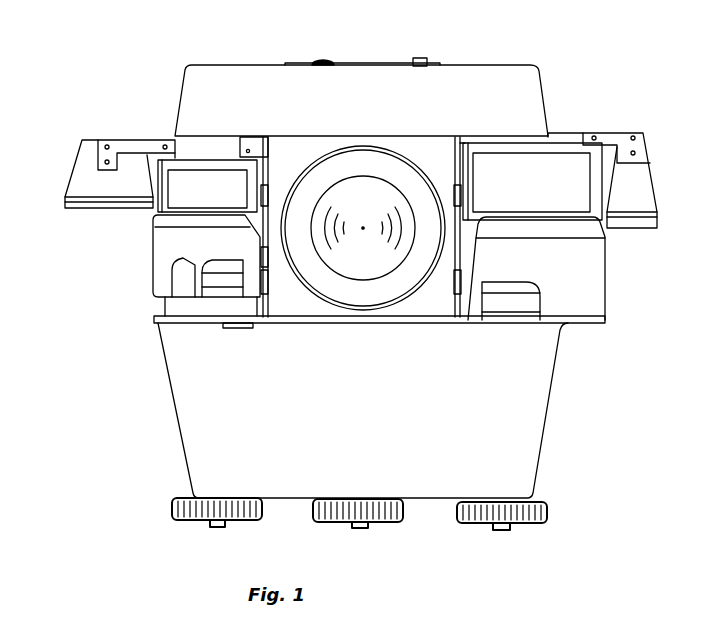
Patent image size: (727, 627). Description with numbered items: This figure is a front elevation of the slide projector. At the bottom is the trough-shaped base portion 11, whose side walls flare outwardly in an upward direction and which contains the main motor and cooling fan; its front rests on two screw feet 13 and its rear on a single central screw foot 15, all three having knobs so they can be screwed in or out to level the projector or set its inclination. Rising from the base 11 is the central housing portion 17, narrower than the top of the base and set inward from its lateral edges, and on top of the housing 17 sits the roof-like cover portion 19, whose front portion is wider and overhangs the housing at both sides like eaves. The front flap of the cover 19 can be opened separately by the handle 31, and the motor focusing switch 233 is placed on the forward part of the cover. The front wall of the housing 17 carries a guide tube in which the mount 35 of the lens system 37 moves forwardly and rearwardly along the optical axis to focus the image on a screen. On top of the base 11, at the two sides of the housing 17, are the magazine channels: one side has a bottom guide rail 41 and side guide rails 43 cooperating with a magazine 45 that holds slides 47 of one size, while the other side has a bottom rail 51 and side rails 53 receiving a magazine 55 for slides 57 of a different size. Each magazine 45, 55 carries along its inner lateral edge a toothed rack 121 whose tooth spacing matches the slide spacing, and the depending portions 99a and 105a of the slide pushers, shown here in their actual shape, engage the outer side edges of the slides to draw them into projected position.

The base portion 11 is at (177, 400).
The screw feet 13 is at (170, 508).
The screw foot 15 is at (380, 480).
The central housing portion 17 is at (293, 145).
The cover portion 19 is at (188, 85).
The handle 31 is at (420, 58).
The mount 35 is at (390, 162).
The lens system 37 is at (345, 188).
The bottom guide rail 41 is at (221, 275).
The side guide rails 43 is at (263, 193).
The magazine 45 is at (158, 245).
The slides 47 is at (168, 193).
The bottom rail 51 is at (507, 302).
The side rails 53 is at (460, 196).
The magazine 55 is at (600, 277).
The slides 57 is at (592, 187).
The slide pusher depending portion 99a is at (80, 171).
The slide pusher depending portion 105a is at (650, 193).
The toothed rack 121 is at (268, 285).
The motor focusing switch 233 is at (325, 61).